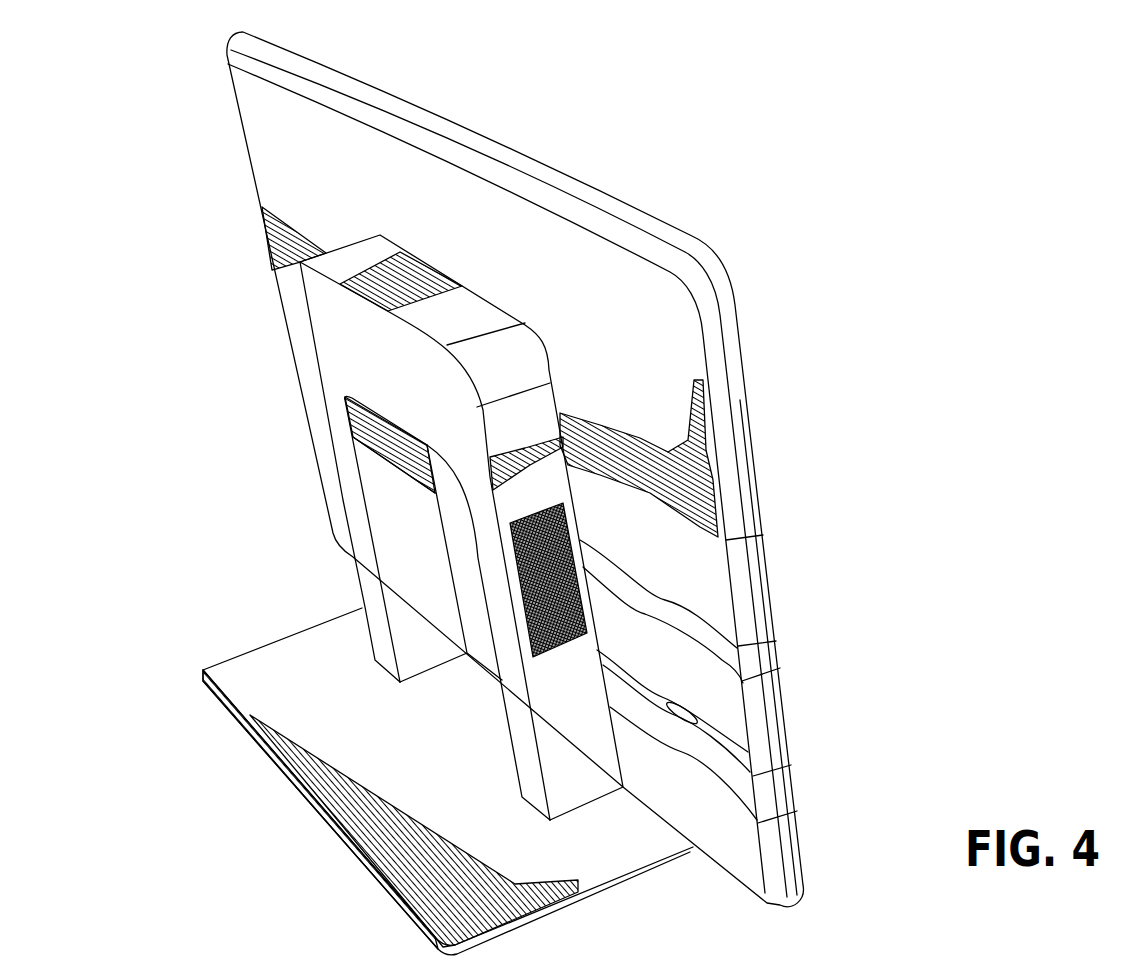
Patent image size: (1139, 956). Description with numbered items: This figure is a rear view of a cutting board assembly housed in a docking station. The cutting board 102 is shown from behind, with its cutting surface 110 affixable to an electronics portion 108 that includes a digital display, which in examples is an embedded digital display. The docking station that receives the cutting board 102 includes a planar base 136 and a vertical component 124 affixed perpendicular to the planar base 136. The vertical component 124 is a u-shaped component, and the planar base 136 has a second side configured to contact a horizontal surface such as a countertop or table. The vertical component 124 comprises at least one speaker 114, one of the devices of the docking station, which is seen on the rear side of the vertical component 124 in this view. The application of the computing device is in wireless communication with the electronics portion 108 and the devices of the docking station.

The cutting board 102 is at (885, 428).
The electronics portion 108 is at (677, 341).
The cutting surface 110 is at (740, 622).
The speaker 114 is at (578, 591).
The vertical component 124 is at (406, 376).
The planar base 136 is at (425, 770).